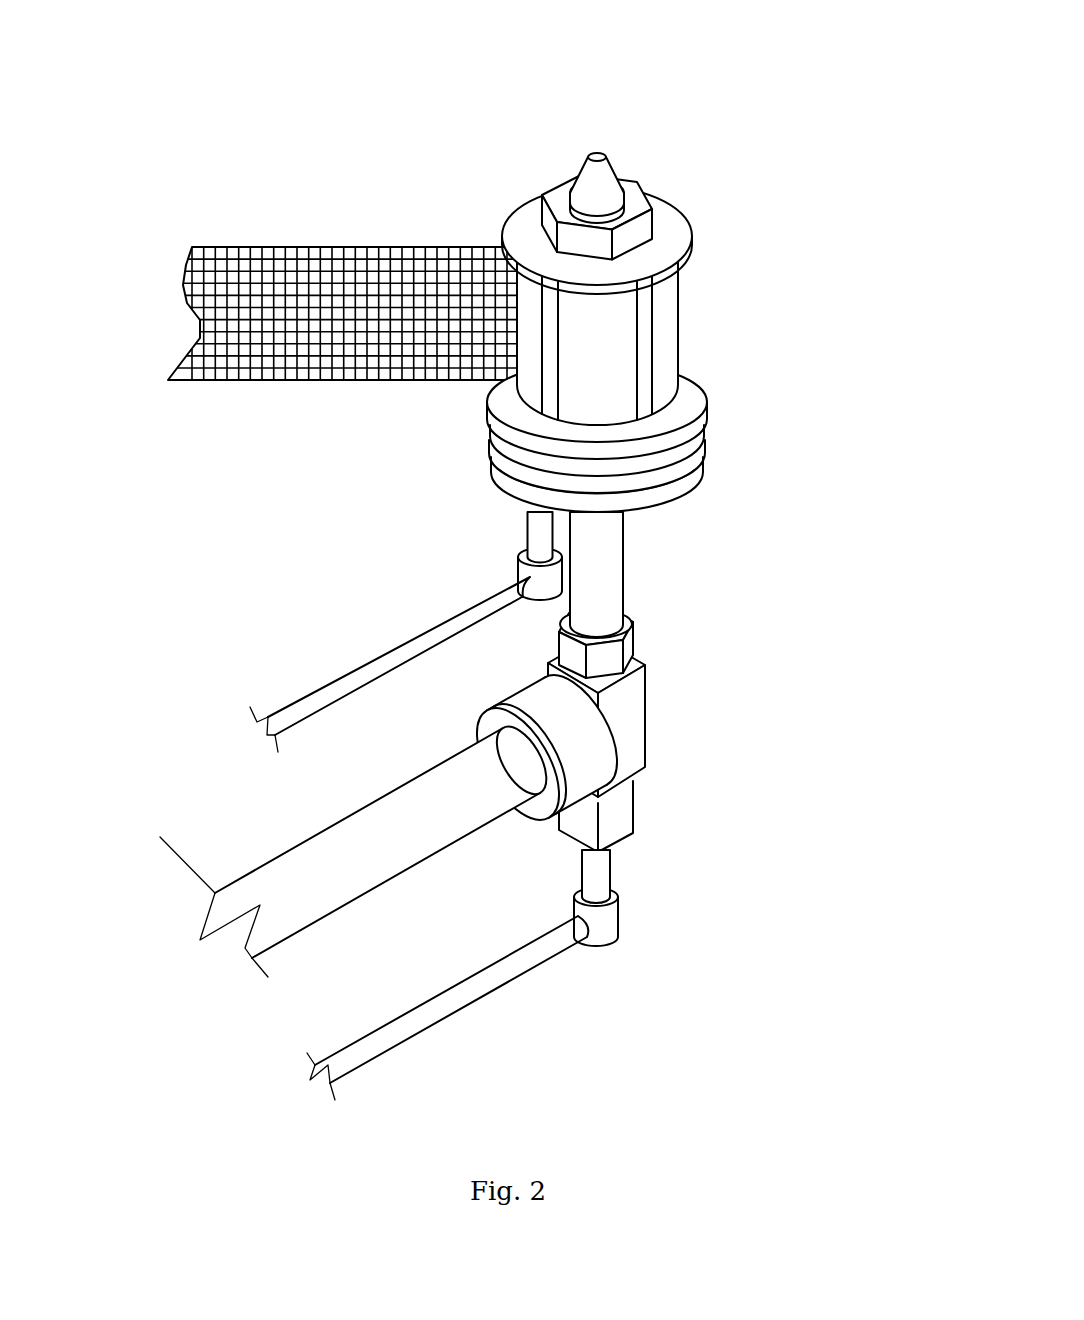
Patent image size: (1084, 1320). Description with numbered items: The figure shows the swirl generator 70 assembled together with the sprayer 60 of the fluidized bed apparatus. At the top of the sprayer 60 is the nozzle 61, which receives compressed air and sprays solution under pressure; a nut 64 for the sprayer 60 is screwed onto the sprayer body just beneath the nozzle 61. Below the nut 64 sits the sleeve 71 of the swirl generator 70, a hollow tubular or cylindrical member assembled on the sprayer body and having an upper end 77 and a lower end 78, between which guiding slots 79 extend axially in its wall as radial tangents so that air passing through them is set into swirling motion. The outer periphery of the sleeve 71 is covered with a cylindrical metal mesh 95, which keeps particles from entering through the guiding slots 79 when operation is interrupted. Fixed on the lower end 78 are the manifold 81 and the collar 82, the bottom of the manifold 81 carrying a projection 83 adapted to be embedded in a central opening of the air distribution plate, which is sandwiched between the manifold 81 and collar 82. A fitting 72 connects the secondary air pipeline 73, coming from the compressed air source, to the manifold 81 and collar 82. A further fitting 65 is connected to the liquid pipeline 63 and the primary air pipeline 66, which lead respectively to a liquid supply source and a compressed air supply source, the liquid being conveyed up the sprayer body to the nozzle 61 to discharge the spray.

The cylindrical metal mesh 95 is at (303, 297).
The nozzle 61 is at (608, 178).
The sprayer 60 is at (620, 200).
The nut 64 is at (652, 205).
The swirl generator 70 is at (630, 233).
The upper end 77 is at (680, 258).
The sleeve 71 is at (665, 312).
The guiding slots 79 is at (642, 383).
The lower end 78 is at (643, 443).
The manifold 81 is at (675, 465).
The collar 82 is at (675, 488).
The projection 83 is at (525, 483).
The fitting 65 is at (627, 575).
The fitting 72 is at (523, 528).
The air pipeline 73 is at (372, 660).
The primary air pipeline 66 is at (310, 838).
The liquid pipeline 63 is at (460, 1012).